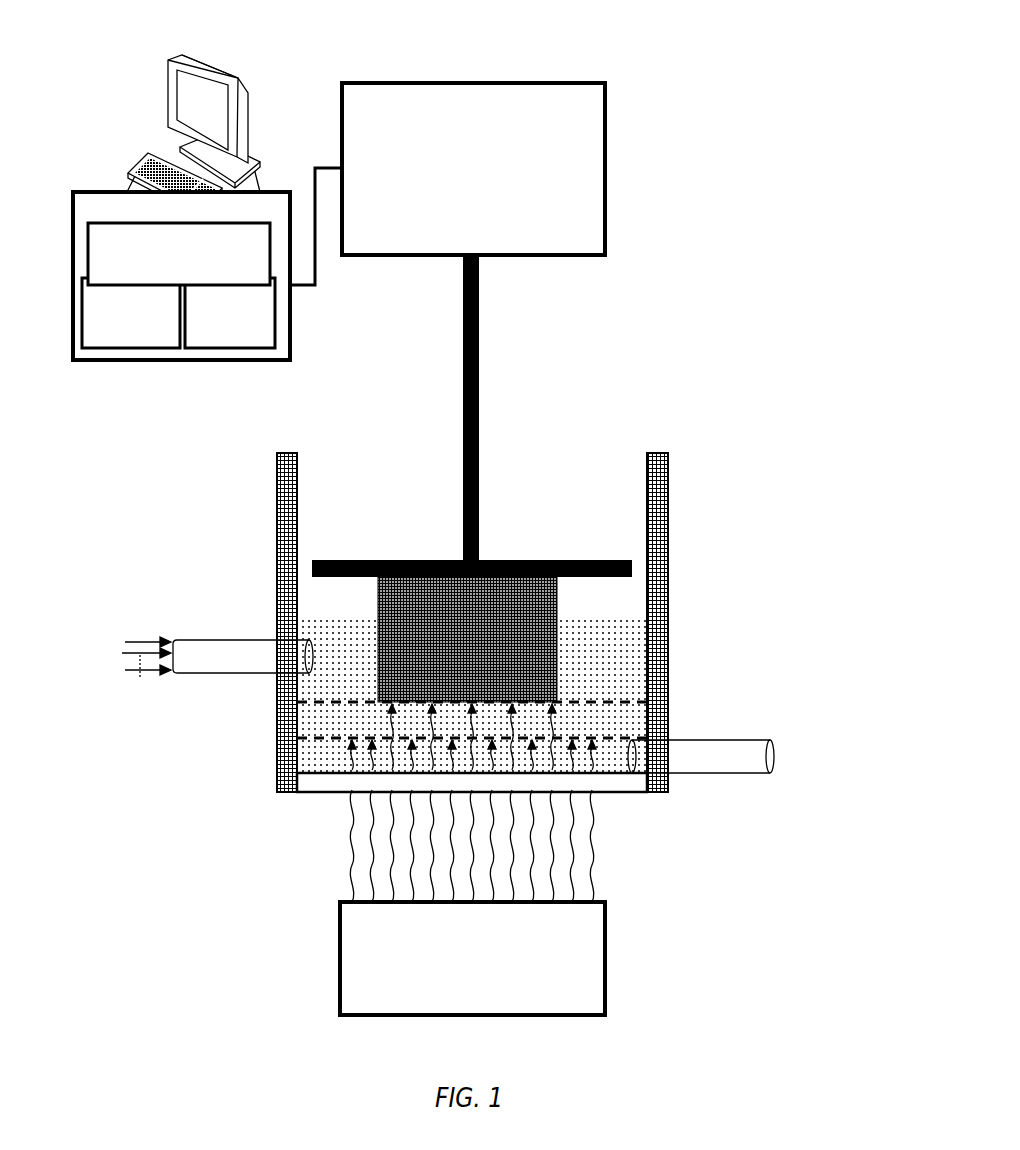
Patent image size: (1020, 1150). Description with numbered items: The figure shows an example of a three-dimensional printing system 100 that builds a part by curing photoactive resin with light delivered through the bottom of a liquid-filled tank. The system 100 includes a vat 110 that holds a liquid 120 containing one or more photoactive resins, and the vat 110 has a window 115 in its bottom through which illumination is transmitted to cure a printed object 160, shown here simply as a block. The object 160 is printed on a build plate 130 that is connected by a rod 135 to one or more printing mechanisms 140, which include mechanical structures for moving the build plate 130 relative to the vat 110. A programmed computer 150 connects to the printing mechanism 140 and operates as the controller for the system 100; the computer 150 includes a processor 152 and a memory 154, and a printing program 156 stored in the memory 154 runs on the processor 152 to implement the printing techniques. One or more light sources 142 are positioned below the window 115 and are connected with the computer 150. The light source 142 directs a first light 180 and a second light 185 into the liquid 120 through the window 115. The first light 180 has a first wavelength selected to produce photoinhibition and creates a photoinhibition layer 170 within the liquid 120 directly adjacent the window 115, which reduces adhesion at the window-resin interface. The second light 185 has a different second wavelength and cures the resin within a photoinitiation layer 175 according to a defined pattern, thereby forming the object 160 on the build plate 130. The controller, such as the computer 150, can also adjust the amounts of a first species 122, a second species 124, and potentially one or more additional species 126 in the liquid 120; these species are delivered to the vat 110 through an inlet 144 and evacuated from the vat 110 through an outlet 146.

The 3D printing system 100 is at (783, 62).
The vat 110 is at (277, 483).
The window 115 is at (623, 792).
The liquid 120 is at (602, 667).
The first species 122 is at (158, 641).
The second species 124 is at (126, 669).
The additional species 126 is at (139, 680).
The build plate 130 is at (540, 560).
The rod 135 is at (479, 408).
The 3D printing mechanism 140 is at (605, 168).
The light source 142 is at (605, 958).
The inlet 144 is at (237, 639).
The outlet 146 is at (702, 740).
The computer 150 is at (277, 220).
The processor 152 is at (145, 336).
The memory 154 is at (245, 336).
The 3D printing program 156 is at (193, 276).
The 3D printed object 160 is at (377, 603).
The photoinhibition layer 170 is at (277, 757).
The photoinitiation layer 175 is at (277, 718).
The first light 180 is at (352, 888).
The second light 185 is at (380, 825).